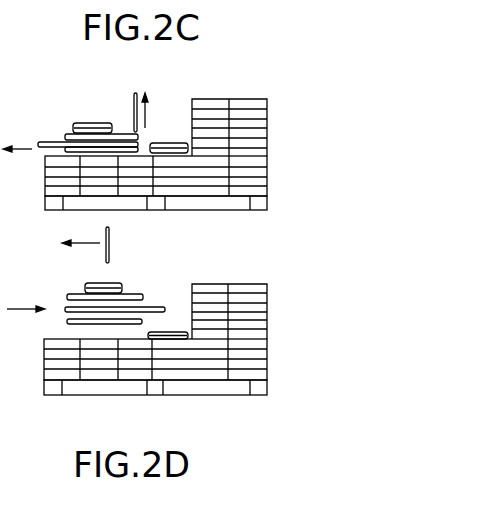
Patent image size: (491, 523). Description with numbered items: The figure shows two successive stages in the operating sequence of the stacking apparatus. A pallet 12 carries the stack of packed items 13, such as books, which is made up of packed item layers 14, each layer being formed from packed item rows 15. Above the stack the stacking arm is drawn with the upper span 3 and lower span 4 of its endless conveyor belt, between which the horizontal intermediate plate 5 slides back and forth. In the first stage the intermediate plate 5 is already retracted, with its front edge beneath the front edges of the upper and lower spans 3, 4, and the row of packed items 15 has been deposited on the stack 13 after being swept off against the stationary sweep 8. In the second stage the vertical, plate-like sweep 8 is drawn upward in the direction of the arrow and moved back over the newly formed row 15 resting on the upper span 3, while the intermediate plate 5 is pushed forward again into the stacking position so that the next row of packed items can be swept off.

In FIG. 2D, the upper span 3 is at (67, 298).
In FIG. 2D, the lower span 4 is at (67, 321).
In FIG. 2D, the intermediate plate 5 is at (157, 307).
In FIG. 2D, the sweep 8 is at (110, 237).
In FIG. 2C, the pallet 12 is at (258, 203).
In FIG. 2D, the pallet 12 is at (220, 390).
In FIG. 2C, the stack of packed items 13 is at (282, 116).
In FIG. 2D, the stack of packed items 13 is at (293, 317).
In FIG. 2C, the packed item layers 14 is at (287, 160).
In FIG. 2D, the packed item layers 14 is at (287, 369).
In FIG. 2C, the packed item rows 15 is at (95, 112).
In FIG. 2D, the packed item rows 15 is at (108, 283).